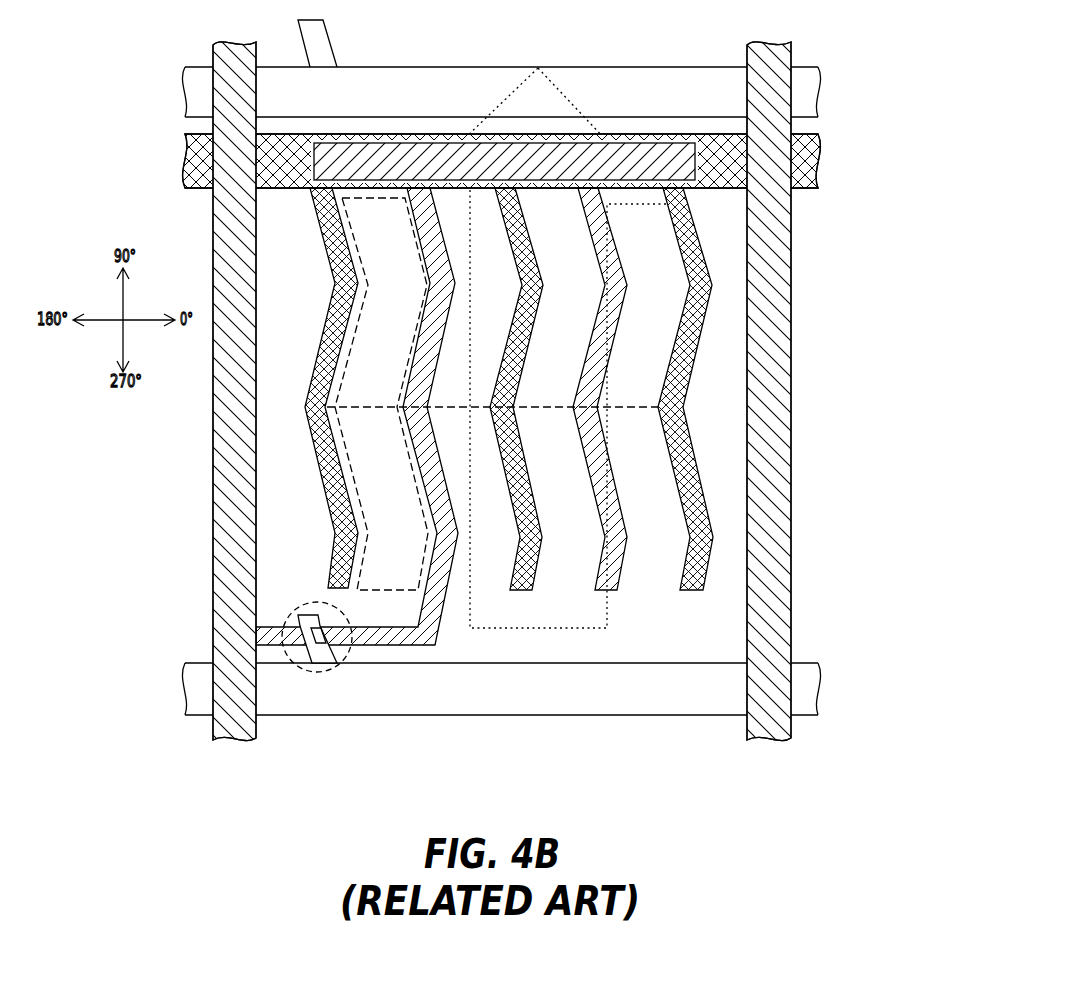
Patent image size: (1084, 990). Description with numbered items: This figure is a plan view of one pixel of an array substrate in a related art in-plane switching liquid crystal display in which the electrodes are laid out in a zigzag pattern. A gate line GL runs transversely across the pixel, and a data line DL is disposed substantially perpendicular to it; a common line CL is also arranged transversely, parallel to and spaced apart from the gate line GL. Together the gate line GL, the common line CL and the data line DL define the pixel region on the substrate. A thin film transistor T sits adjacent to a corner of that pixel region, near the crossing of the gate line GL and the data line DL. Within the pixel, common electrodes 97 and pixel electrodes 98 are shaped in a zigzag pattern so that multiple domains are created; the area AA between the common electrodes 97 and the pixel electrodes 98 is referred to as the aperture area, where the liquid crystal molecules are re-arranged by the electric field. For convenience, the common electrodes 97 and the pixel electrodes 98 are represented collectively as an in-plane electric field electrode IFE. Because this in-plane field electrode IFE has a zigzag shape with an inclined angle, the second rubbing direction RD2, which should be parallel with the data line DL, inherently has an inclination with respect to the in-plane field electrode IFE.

The common line CL is at (822, 162).
The gate line GL is at (822, 693).
The data line DL is at (233, 720).
The thin film transistor T is at (317, 674).
The aperture area AA is at (358, 251).
The second rubbing direction RD2 is at (538, 630).
The common electrode 97 is at (332, 225).
The pixel electrode 98 is at (447, 337).
The in-plane electric field electrode IFE is at (601, 416).